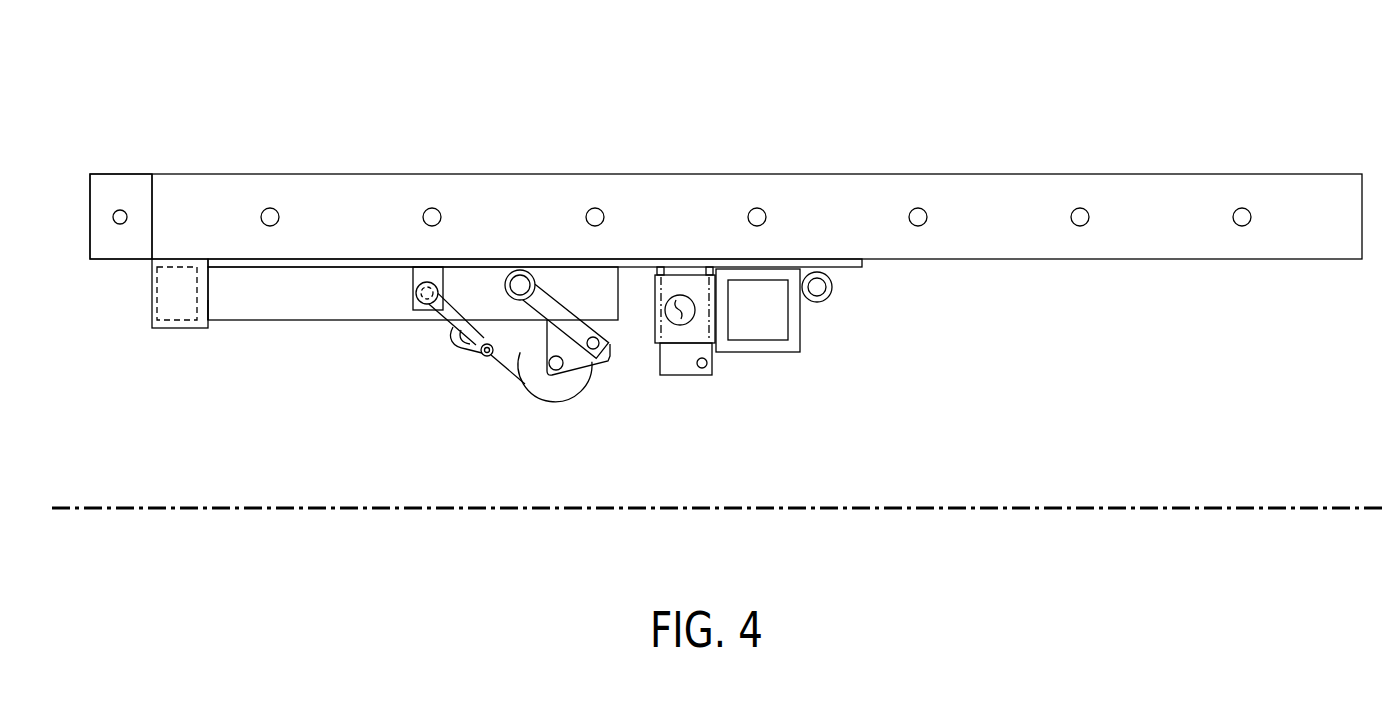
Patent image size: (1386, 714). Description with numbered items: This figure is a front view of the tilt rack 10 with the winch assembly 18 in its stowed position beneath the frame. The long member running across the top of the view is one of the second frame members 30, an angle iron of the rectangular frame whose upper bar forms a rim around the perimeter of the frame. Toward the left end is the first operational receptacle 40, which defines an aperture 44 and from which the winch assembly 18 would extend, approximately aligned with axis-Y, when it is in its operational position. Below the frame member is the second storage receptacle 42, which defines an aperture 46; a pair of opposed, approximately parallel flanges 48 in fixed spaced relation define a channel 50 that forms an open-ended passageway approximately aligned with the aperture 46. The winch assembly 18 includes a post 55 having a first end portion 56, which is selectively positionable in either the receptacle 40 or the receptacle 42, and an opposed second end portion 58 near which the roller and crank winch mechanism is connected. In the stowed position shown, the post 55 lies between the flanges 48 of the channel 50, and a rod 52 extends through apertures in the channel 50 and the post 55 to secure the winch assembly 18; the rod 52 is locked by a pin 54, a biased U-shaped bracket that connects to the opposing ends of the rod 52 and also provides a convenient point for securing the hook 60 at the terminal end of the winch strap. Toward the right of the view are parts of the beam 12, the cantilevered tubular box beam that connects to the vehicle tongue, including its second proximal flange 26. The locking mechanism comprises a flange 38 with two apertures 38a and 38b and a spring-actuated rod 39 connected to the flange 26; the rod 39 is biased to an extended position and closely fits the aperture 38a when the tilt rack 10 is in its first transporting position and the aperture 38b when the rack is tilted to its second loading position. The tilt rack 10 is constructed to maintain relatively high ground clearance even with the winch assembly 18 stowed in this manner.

The tilt rack 10 is at (887, 70).
The beam 12 is at (800, 308).
The winch assembly 18 is at (322, 330).
The second proximal flange 26 is at (655, 323).
The second frame members 30 is at (999, 190).
The flange 38 is at (703, 326).
The aperture 38a is at (669, 268).
The aperture 38b is at (696, 368).
The spring-actuated rod 39 is at (699, 285).
The first operational receptacle 40 is at (84, 209).
The second storage receptacle 42 is at (144, 298).
The aperture 44 is at (126, 168).
The aperture 46 is at (216, 333).
The flanges 48 is at (416, 296).
The channel 50 is at (452, 276).
The pin 52 is at (423, 274).
The pin 54 is at (452, 330).
The post 55 is at (257, 301).
The first end portion 56 is at (217, 298).
The second end portion 58 is at (613, 278).
The hook 60 is at (487, 344).